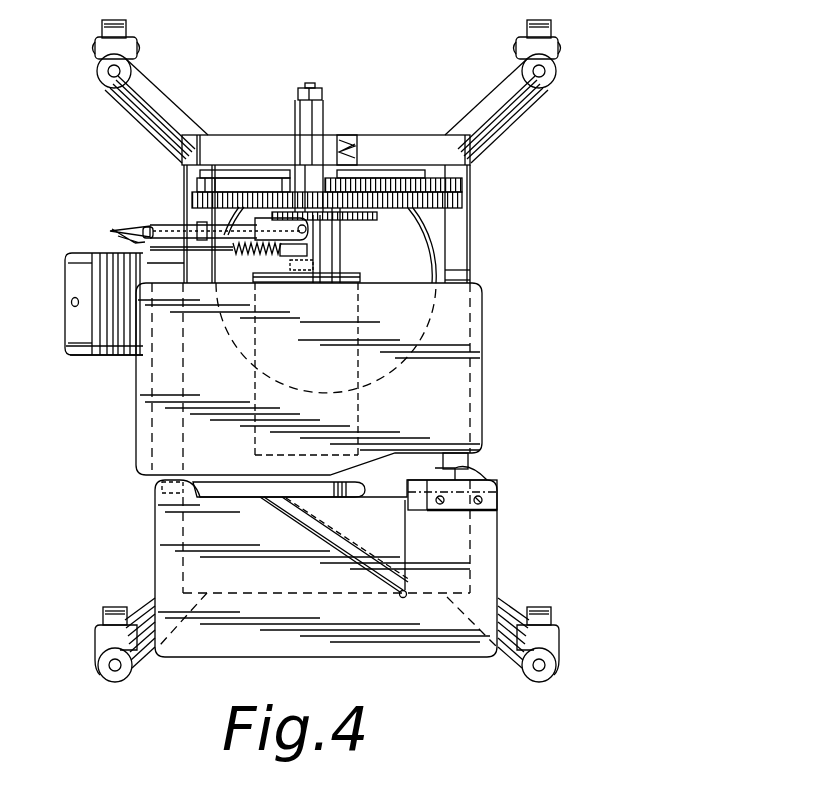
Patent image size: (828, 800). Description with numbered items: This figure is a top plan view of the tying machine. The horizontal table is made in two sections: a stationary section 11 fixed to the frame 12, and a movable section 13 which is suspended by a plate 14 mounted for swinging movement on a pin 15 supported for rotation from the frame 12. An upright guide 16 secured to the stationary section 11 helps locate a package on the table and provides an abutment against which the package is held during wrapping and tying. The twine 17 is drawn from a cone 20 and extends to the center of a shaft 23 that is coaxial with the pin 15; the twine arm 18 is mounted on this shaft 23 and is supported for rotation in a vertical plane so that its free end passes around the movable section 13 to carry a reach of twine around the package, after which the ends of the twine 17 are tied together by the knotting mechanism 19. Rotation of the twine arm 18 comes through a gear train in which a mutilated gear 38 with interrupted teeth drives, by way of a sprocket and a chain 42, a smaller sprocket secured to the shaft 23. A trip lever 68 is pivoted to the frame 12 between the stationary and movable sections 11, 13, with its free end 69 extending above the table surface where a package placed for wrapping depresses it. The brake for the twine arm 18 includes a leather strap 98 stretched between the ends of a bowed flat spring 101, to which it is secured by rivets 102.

The stationary table section 11 is at (487, 543).
The frame 12 is at (475, 583).
The movable table section 13 is at (455, 393).
The plate 14 is at (322, 283).
The pin 15 is at (307, 283).
The upright guide 16 is at (423, 500).
The twine 17 is at (306, 86).
The twine arm 18 is at (172, 225).
The knotting mechanism 19 is at (484, 467).
The cone 20 is at (433, 238).
The shaft 23 is at (325, 92).
The mutilated gear 38 is at (465, 188).
The chain 42 is at (340, 231).
The trip lever 68 is at (268, 492).
The free end 69 is at (357, 488).
The leather strap 98 is at (77, 284).
The spring 101 is at (95, 358).
The rivets 102 is at (72, 303).